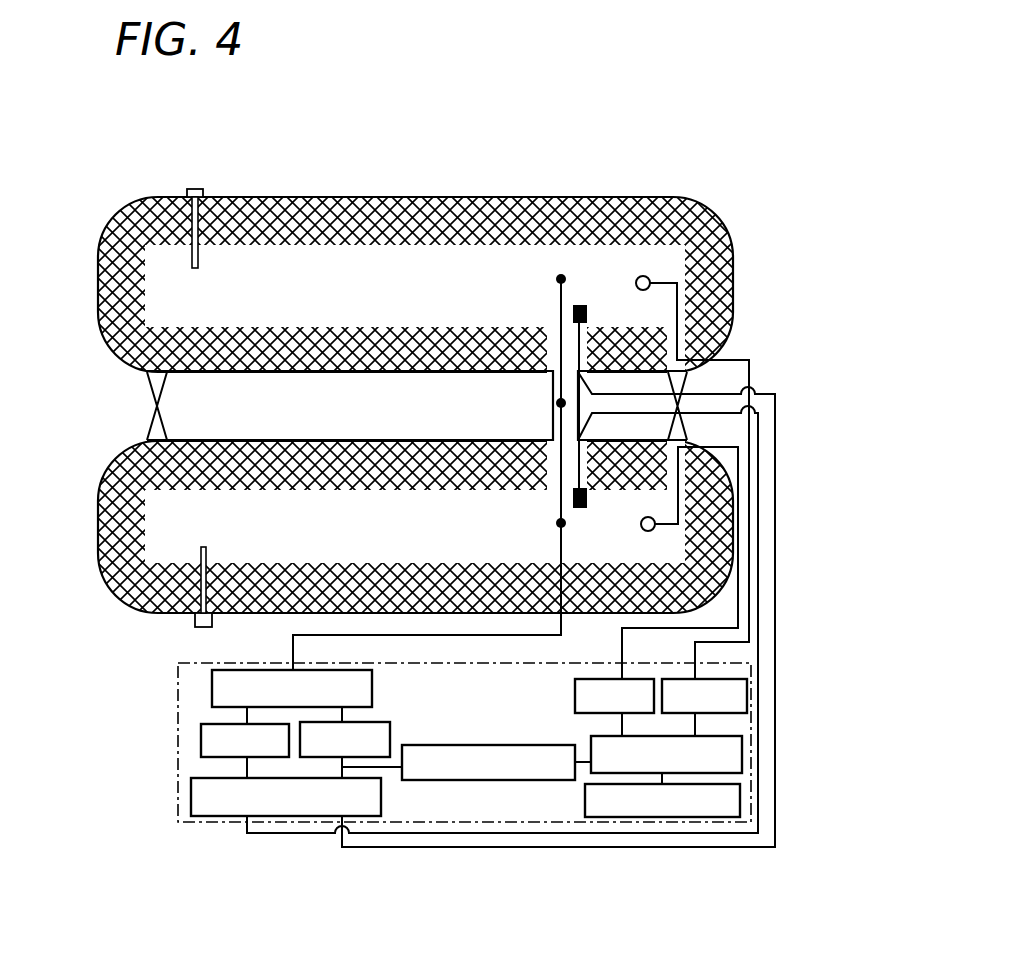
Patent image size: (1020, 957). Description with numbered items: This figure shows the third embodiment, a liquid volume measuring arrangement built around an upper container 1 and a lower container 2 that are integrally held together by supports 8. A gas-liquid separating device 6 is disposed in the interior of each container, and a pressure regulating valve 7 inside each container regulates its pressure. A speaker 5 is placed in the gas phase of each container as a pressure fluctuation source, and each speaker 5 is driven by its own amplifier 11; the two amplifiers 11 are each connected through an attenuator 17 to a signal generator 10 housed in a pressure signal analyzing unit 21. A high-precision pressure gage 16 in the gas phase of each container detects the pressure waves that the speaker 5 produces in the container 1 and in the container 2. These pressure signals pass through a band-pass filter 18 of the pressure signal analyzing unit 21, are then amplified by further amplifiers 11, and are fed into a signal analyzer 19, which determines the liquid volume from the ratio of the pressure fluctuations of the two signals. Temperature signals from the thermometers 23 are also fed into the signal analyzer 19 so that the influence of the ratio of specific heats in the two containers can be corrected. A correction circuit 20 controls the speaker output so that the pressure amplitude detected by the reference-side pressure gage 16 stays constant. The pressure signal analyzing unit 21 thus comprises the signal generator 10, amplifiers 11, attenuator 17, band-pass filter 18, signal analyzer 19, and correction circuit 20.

The container 1 is at (350, 197).
The container 2 is at (97, 572).
The speaker 5 is at (652, 281).
The gas-liquid separating device 6 is at (380, 383).
The pressure regulating valve 7 is at (190, 190).
The support 8 is at (157, 407).
The signal generator 10 is at (740, 797).
The amplifier 11 is at (300, 723).
The high-precision pressure gage 16 is at (585, 305).
The attenuator 17 is at (742, 755).
The band-pass filter 18 is at (191, 800).
The signal analyzer 19 is at (212, 680).
The correction circuit 20 is at (478, 781).
The pressure signal analyzing unit 21 is at (210, 822).
The thermometer 23 is at (556, 277).